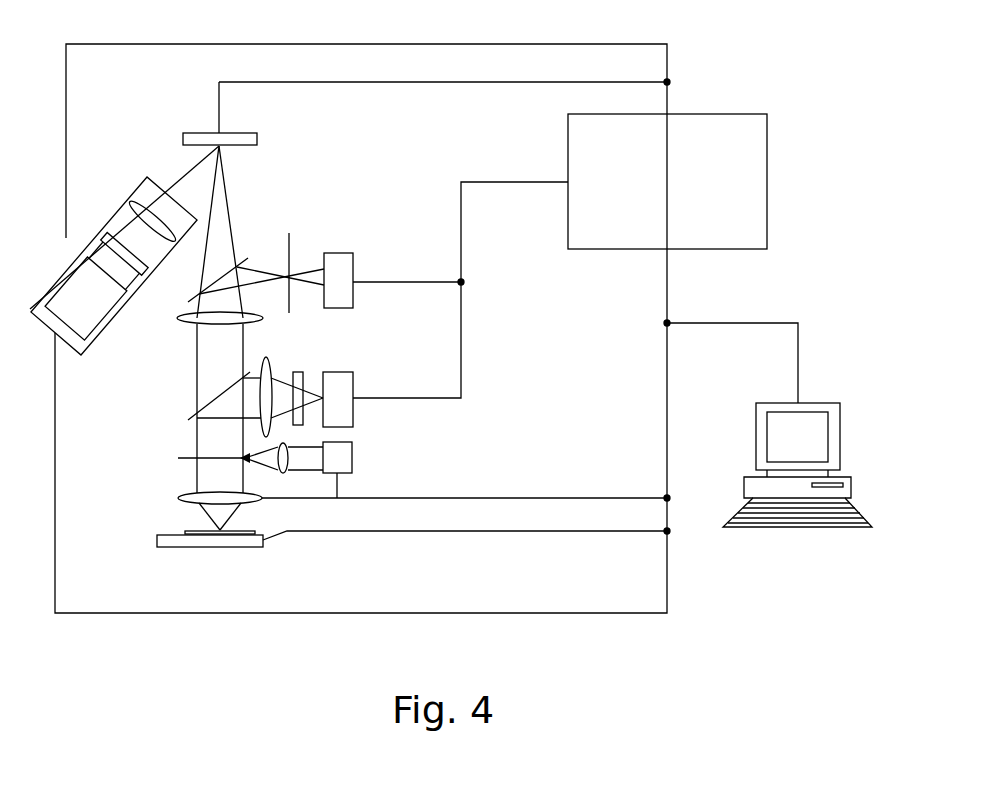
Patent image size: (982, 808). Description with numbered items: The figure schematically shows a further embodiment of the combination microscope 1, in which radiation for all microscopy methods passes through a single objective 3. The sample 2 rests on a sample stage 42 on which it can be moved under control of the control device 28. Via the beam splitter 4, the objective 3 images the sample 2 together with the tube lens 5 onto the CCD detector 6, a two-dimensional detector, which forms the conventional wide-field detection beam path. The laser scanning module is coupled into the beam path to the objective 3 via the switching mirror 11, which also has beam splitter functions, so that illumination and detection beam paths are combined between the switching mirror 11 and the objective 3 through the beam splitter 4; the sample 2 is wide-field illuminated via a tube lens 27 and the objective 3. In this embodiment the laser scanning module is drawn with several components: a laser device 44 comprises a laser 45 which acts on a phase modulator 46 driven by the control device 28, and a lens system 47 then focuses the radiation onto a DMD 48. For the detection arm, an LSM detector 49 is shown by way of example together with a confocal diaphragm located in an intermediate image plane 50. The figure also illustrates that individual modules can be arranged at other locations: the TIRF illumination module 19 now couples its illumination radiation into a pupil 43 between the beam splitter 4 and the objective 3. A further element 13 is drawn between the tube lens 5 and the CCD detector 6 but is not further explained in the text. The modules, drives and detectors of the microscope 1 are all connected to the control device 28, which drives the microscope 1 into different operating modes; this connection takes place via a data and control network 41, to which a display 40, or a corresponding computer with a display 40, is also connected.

The combination microscope 1 is at (50, 424).
The sample 2 is at (195, 532).
The objective 3 is at (178, 497).
The beam splitter 4 is at (205, 405).
The tube lens 5 is at (268, 368).
The CCD detector 6 is at (353, 386).
The switching mirror 11 is at (240, 263).
The filter 13 is at (300, 372).
The TIRF illumination module 19 is at (352, 458).
The tube lens 27 is at (247, 313).
The control device 28 is at (767, 182).
The display 40 is at (817, 403).
The data and control network 41 is at (667, 405).
The sample stage 42 is at (237, 548).
The pupil 43 is at (178, 458).
The laser device 44 is at (90, 345).
The laser 45 is at (113, 308).
The phase modulator 46 is at (108, 240).
The lens system 47 is at (134, 203).
The DMD 48 is at (257, 139).
The LSM detector 49 is at (353, 263).
The intermediate image plane 50 is at (289, 253).